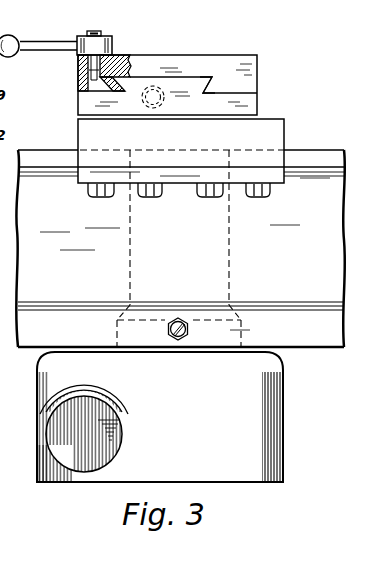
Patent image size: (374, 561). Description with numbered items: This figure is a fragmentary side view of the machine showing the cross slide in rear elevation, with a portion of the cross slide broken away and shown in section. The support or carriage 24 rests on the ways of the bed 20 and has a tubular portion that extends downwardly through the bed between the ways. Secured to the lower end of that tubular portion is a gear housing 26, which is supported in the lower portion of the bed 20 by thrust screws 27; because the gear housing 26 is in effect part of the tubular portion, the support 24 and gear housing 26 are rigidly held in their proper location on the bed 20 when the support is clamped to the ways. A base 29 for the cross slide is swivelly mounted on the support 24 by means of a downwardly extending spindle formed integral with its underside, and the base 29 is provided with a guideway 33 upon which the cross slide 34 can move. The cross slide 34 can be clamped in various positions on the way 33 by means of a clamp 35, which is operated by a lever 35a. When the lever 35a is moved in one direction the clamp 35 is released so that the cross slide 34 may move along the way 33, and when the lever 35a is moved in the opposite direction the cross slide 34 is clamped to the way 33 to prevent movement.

The bed 20 is at (320, 153).
The support or carriage 24 is at (270, 143).
The gear housing 26 is at (281, 418).
The thrust screws 27 is at (189, 330).
The base 29 is at (249, 107).
The guideway 33 is at (200, 81).
The cross slide 34 is at (249, 72).
The clamp 35 is at (90, 71).
The lever 35a is at (40, 45).